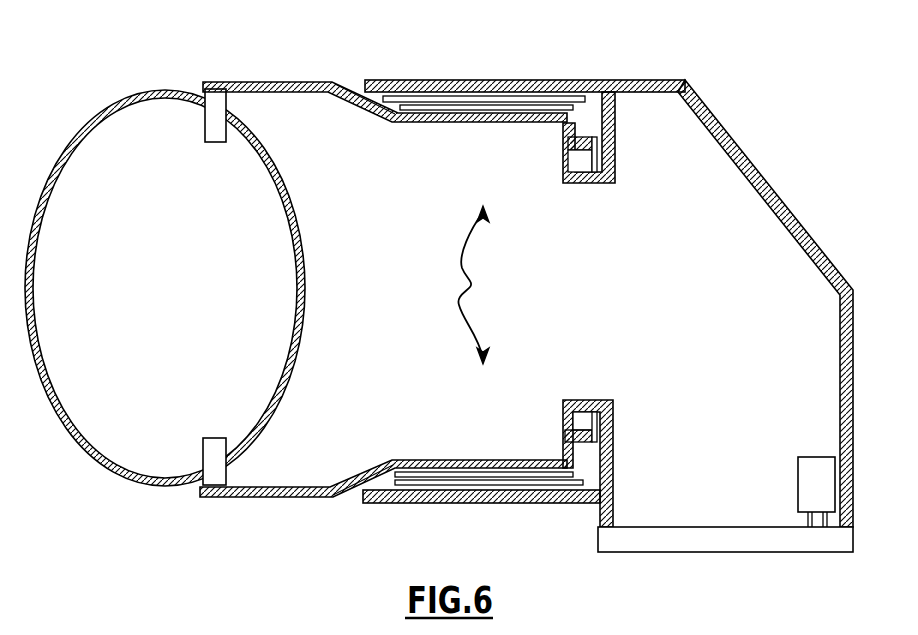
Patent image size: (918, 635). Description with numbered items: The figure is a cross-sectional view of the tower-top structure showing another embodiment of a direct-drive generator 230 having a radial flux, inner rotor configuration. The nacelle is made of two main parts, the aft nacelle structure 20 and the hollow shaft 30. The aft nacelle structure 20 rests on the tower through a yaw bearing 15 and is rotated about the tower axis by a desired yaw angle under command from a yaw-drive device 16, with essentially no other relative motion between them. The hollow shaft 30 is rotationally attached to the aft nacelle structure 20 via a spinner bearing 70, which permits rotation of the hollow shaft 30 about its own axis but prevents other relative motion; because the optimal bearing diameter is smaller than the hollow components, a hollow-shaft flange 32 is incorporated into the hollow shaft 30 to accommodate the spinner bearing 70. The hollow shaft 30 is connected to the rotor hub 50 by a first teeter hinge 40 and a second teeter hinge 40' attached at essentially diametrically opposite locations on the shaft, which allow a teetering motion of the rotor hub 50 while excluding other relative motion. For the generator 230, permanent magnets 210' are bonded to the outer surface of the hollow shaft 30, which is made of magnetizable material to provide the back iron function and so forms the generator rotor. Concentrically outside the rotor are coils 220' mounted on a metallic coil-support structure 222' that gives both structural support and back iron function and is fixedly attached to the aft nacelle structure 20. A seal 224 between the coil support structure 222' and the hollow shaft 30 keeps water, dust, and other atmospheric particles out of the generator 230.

The yaw bearing 15 is at (728, 538).
The yaw-drive device 16 is at (810, 457).
The aft nacelle structure 20 is at (777, 217).
The hollow shaft 30 is at (423, 122).
The hollow-shaft flange 32 is at (612, 137).
The first teeter hinge 40 is at (199, 142).
The second teeter hinge 40' is at (198, 430).
The rotor hub 50 is at (308, 282).
The spinner bearing 70 is at (568, 160).
The permanent magnets 210' is at (489, 449).
The coils 220' is at (447, 254).
The coil-support structure 222' is at (524, 286).
The seal 224 is at (355, 87).
The generator 230 is at (490, 285).